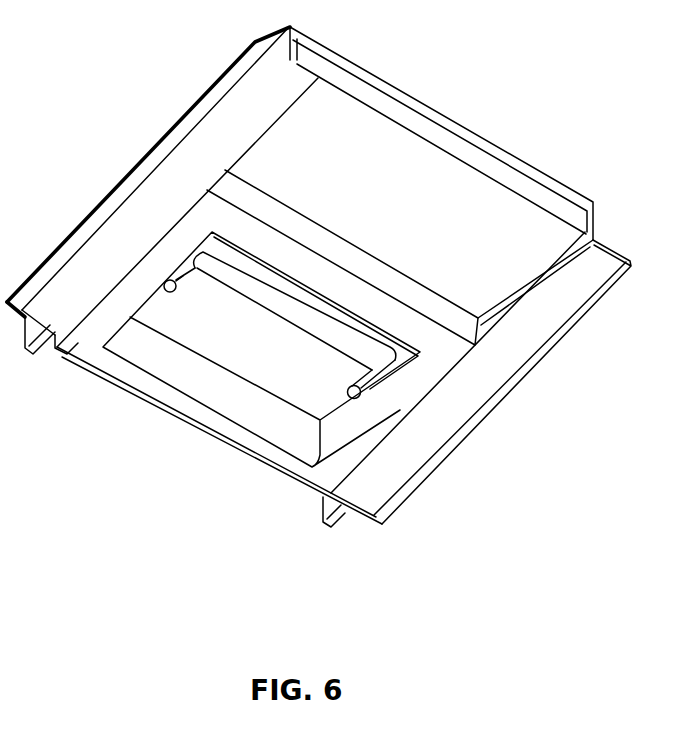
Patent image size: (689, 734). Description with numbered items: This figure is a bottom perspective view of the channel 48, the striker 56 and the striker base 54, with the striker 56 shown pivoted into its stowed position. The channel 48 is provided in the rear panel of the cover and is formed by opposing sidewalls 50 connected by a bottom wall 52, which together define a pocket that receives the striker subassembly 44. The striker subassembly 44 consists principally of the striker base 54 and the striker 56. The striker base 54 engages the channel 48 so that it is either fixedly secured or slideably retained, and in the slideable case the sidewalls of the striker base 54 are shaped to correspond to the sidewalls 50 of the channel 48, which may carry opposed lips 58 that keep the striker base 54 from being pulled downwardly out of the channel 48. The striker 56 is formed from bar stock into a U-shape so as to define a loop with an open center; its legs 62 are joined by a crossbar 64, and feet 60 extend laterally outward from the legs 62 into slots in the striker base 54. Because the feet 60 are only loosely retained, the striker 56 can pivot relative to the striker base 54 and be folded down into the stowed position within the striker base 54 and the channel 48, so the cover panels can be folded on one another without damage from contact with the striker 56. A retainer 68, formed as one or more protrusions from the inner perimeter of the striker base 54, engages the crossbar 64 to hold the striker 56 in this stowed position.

The striker subassembly 44 is at (462, 400).
The channel 48 is at (560, 353).
The sidewalls 50 is at (578, 194).
The bottom wall 52 is at (436, 148).
The striker base 54 is at (258, 200).
The striker 56 is at (178, 296).
The lips 58 is at (352, 70).
The feet 60 is at (354, 399).
The legs 62 is at (148, 265).
The crossbar 64 is at (388, 329).
The retainer 68 is at (330, 306).